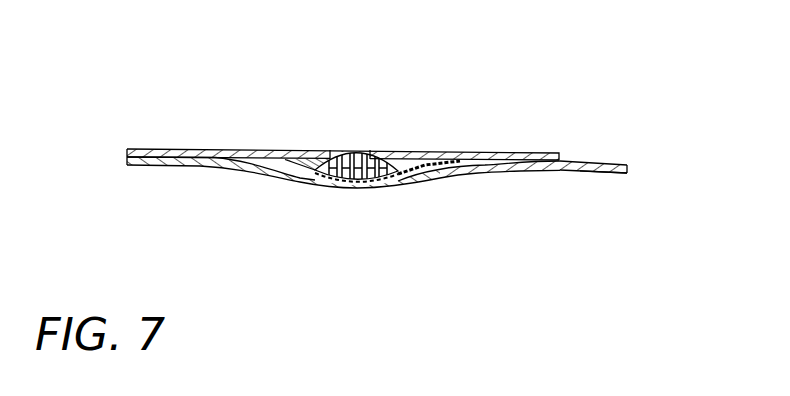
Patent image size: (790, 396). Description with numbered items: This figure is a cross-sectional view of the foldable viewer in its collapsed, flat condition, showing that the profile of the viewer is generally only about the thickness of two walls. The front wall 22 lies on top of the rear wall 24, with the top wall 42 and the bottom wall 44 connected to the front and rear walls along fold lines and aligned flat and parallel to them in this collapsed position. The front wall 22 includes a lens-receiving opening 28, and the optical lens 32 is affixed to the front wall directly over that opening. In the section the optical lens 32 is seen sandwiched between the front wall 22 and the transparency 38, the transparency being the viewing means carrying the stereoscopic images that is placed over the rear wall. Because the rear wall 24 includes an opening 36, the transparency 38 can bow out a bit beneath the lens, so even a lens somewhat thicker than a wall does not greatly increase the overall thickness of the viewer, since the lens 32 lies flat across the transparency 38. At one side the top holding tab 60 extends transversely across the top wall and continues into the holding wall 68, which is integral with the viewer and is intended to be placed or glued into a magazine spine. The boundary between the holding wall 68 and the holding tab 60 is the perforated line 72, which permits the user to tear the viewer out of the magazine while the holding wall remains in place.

The front wall 22 is at (410, 152).
The rear wall 24 is at (272, 178).
The lens-receiving opening 28 is at (370, 152).
The optical lens 32 is at (345, 152).
The opening 36 is at (403, 181).
The transparency 38 is at (352, 182).
The top wall 42 is at (525, 153).
The bottom wall 44 is at (146, 149).
The top holding tab 60 is at (538, 172).
The holding wall 68 is at (620, 163).
The perforated line 72 is at (597, 173).